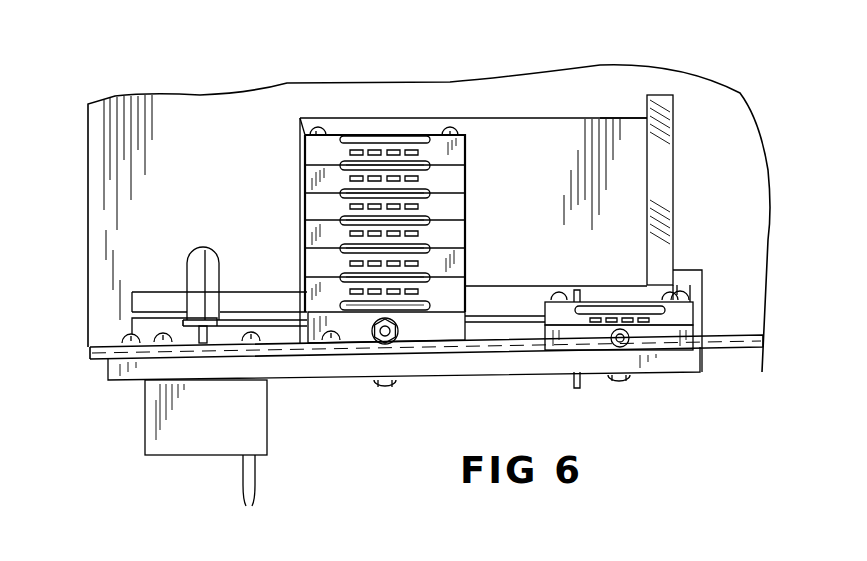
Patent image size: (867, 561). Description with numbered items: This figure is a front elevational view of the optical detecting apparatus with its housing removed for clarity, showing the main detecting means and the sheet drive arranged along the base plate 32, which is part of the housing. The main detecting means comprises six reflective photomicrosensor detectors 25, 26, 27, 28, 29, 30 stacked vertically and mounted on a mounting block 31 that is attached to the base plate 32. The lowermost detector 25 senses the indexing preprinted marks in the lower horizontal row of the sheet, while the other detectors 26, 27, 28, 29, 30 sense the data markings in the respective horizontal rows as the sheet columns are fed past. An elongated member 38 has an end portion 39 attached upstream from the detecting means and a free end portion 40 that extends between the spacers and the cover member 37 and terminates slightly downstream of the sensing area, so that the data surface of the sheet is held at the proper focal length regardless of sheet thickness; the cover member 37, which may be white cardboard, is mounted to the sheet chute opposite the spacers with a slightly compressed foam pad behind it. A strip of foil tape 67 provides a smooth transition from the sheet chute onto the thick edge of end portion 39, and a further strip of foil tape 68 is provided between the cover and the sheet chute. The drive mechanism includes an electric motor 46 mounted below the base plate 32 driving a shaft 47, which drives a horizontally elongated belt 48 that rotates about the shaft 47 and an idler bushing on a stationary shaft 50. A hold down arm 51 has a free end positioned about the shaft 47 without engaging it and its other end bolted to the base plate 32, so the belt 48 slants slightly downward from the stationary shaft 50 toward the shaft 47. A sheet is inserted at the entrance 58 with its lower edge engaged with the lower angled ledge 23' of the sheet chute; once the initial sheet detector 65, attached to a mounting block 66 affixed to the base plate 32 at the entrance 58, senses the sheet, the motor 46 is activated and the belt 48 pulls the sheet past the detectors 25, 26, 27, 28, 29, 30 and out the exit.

The lower angled ledge 23' is at (396, 325).
The detector 25 is at (455, 298).
The detector 26 is at (465, 268).
The detector 27 is at (465, 238).
The detector 28 is at (465, 208).
The detector 29 is at (465, 178).
The detector 30 is at (465, 147).
The mounting block 31 is at (449, 341).
The base plate 32 is at (437, 372).
The cover member 37 is at (212, 250).
The elongated member 38 is at (562, 176).
The end portion 39 is at (632, 117).
The free end portion 40 is at (300, 120).
The electric motor 46 is at (219, 432).
The shaft 47 is at (204, 338).
The belt 48 is at (250, 320).
The stationary shaft 50 is at (580, 290).
The hold down arm 51 is at (160, 310).
The entrance 58 is at (677, 295).
The initial sheet detector 65 is at (693, 312).
The mounting block 66 is at (693, 334).
The foil tape 67 is at (674, 128).
The foil tape 68 is at (702, 290).